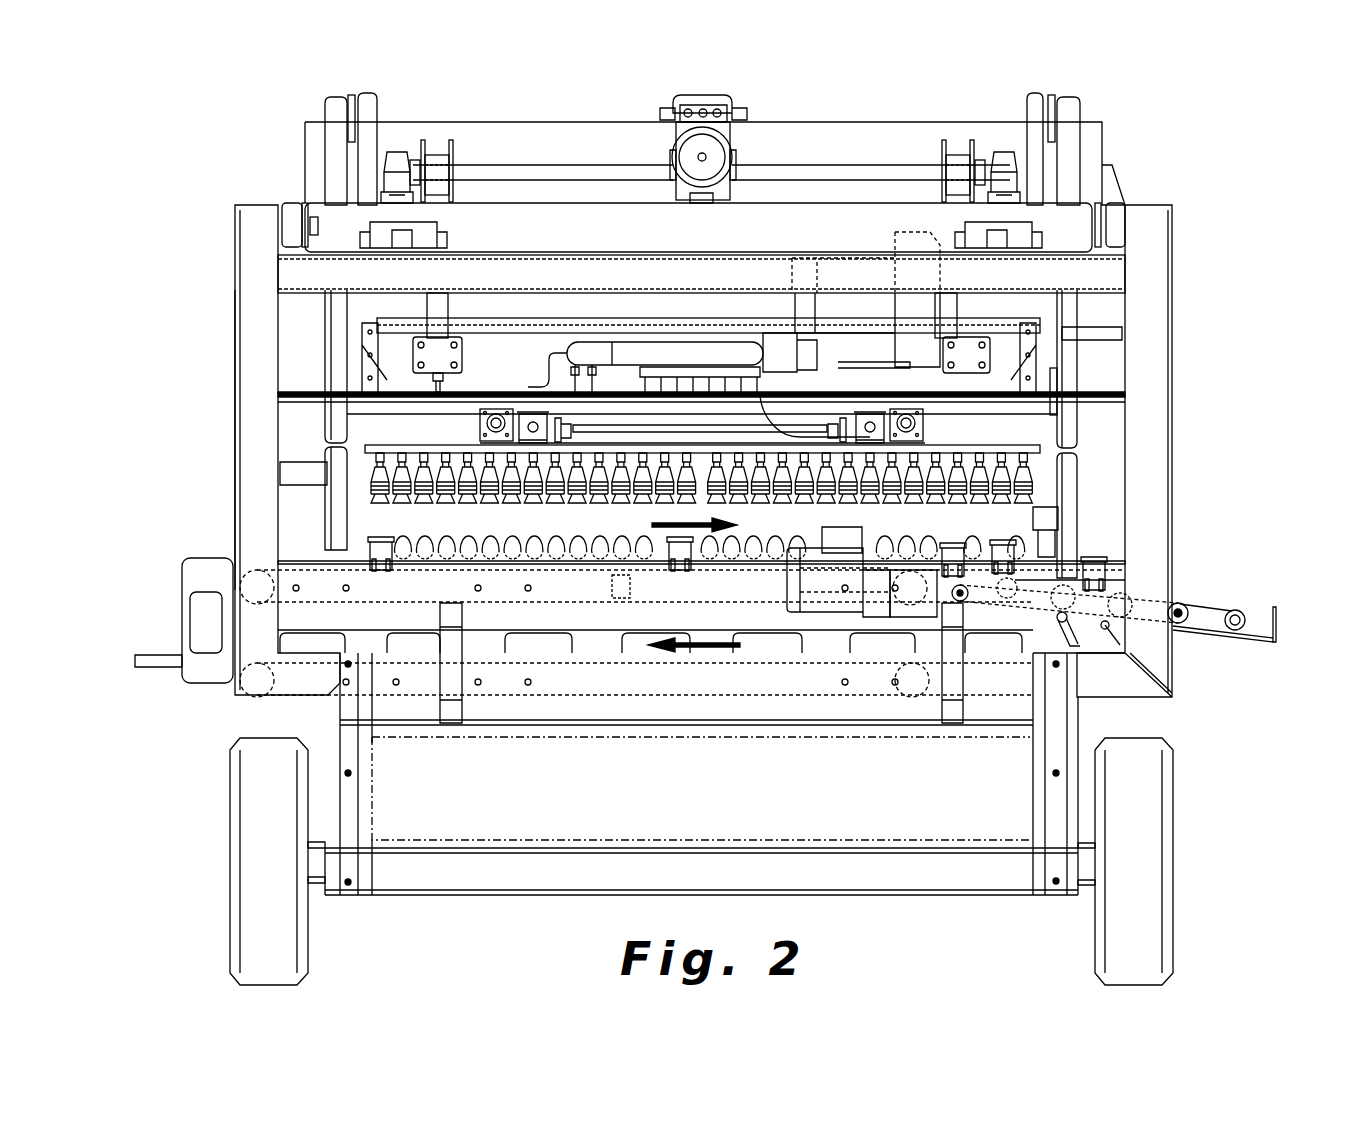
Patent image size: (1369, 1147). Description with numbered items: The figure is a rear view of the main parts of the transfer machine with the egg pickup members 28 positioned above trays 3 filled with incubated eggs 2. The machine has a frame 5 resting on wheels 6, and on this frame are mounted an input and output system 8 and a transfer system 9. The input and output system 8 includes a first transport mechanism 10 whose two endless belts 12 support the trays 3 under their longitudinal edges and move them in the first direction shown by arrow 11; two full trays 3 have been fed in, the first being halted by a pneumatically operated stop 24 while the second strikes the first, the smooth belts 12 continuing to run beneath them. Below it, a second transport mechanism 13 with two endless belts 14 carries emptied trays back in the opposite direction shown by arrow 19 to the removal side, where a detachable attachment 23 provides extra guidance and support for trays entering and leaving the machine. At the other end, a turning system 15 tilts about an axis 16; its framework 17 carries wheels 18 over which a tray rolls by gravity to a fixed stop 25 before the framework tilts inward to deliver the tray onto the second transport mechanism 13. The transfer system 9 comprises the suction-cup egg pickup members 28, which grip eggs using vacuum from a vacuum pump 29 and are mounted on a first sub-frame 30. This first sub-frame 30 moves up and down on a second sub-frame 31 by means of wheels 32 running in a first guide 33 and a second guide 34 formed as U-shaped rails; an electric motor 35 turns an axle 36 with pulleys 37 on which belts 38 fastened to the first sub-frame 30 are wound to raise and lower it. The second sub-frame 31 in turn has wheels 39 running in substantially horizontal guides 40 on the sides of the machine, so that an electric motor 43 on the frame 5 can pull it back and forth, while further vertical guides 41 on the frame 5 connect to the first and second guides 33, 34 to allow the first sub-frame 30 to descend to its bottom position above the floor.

The incubated eggs 2 is at (410, 553).
The trays 3 is at (372, 560).
The frame 5 is at (1145, 358).
The wheels 6 is at (1155, 930).
The input and output system 8 is at (260, 650).
The transfer system 9 is at (298, 365).
The first transport mechanism 10 is at (290, 595).
The arrow 11 is at (652, 525).
The endless belts 12 is at (262, 580).
The second transport mechanism 13 is at (320, 690).
The endless belts 14 is at (305, 672).
The turning system 15 is at (1215, 597).
The axis 16 is at (1110, 628).
The framework 17 is at (1205, 660).
The wheels 18 is at (1185, 608).
The arrow 19 is at (760, 632).
The detachable attachment 23 is at (183, 585).
The pneumatically operated stop 24 is at (1045, 540).
The fixed stop 25 is at (1276, 622).
The egg pickup members 28 is at (1030, 470).
The vacuum pump 29 is at (915, 325).
The first sub-frame 30 is at (1025, 120).
The second sub-frame 31 is at (1070, 132).
The wheels 32 is at (355, 108).
The first guide 33 is at (1065, 122).
The second guide 34 is at (330, 110).
The electric motor 35 is at (720, 150).
The axle 36 is at (603, 165).
The pulleys 37 is at (448, 140).
The belts 38 is at (440, 320).
The wheels 39 is at (302, 215).
The guide 40 is at (290, 225).
The further guides 41 is at (330, 498).
The electric motor 43 is at (705, 95).